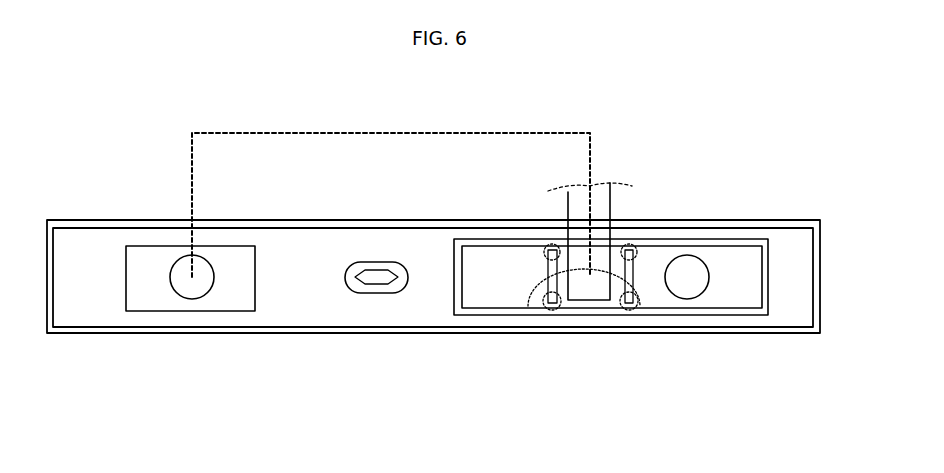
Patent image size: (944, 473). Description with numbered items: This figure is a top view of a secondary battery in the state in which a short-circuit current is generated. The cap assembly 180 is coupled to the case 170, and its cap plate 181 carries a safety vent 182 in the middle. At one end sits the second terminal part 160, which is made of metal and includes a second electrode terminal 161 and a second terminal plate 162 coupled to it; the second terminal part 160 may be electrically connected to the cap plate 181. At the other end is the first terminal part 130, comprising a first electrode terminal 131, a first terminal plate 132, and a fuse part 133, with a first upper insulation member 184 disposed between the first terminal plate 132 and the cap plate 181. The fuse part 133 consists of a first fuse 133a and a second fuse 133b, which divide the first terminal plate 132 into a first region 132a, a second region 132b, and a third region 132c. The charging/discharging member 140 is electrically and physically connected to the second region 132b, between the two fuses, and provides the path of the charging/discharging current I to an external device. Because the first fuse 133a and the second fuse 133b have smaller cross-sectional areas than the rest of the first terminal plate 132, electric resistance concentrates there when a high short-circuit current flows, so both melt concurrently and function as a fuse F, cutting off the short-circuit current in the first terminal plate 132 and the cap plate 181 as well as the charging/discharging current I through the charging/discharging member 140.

The first terminal part 130 is at (600, 350).
The first electrode terminal 131 is at (711, 335).
The first terminal plate 132 is at (612, 330).
The first region 132a is at (530, 312).
The second region 132b is at (622, 302).
The third region 132c is at (562, 372).
The fuse part 133 is at (499, 330).
The first fuse 133a is at (542, 255).
The second fuse 133b is at (545, 283).
The charging/discharging member 140 is at (610, 210).
The second terminal part 160 is at (193, 331).
The second electrode terminal 161 is at (187, 314).
The second terminal plate 162 is at (237, 293).
The case 170 is at (95, 227).
The cap assembly 180 is at (433, 280).
The cap plate 181 is at (310, 300).
The safety vent 182 is at (378, 287).
The first upper insulation member 184 is at (478, 240).
The fuse F is at (635, 251).
The charging/discharging current I is at (390, 132).